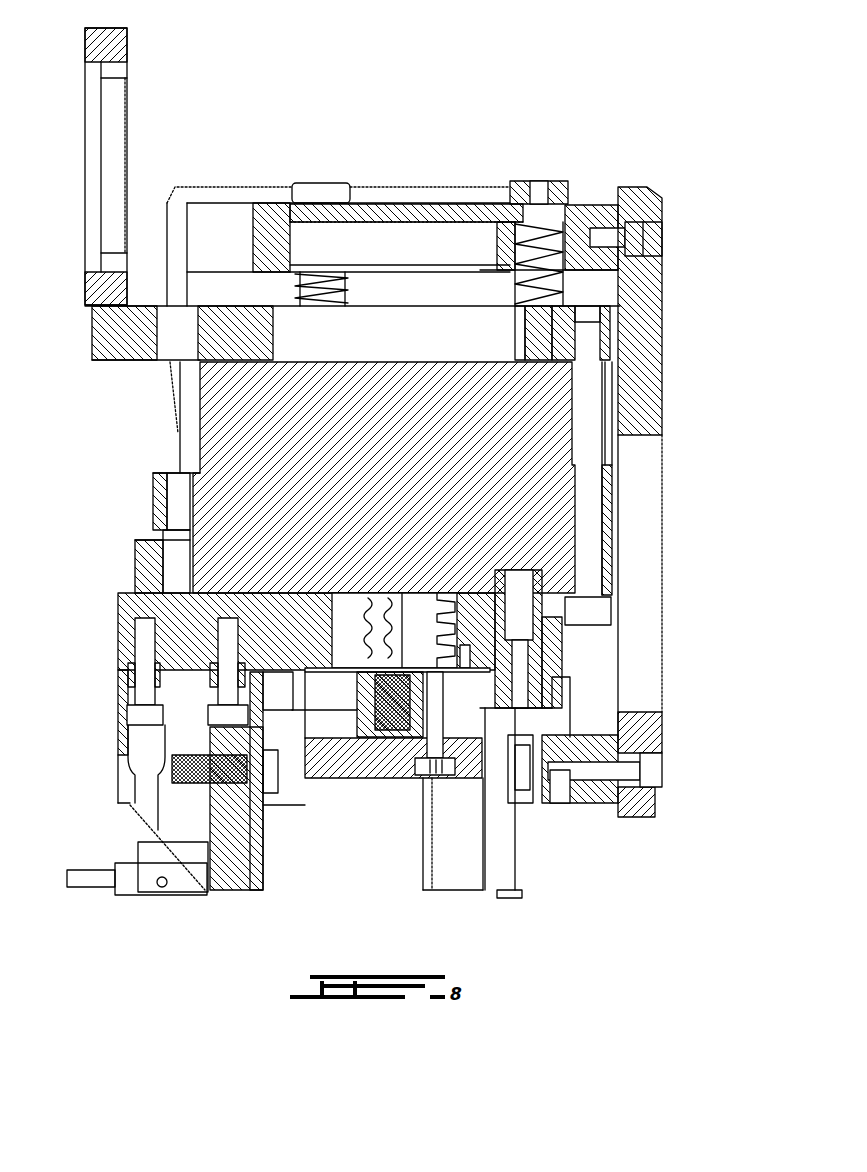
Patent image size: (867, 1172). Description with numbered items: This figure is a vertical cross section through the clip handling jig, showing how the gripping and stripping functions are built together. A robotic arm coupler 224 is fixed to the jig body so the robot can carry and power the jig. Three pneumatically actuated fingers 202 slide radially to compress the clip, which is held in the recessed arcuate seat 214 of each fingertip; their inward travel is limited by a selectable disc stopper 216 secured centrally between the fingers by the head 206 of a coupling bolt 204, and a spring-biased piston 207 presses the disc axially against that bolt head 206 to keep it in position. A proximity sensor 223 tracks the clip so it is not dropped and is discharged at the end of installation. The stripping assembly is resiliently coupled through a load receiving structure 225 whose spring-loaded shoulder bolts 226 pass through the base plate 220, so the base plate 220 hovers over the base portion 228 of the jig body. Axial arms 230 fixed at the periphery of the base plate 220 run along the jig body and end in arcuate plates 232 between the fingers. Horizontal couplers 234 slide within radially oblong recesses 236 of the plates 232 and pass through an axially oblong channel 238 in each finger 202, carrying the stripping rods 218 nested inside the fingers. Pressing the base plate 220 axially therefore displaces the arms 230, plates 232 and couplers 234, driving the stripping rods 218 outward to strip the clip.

The fingers 202 is at (118, 742).
The coupling bolt 204 is at (522, 800).
The bolt head 206 is at (440, 892).
The spring-biased piston 207 is at (397, 740).
The recessed arcuate seat 214 is at (508, 898).
The selectable disc stopper 216 is at (360, 780).
The stripping rods 218 is at (245, 893).
The base plate 220 is at (453, 203).
The proximity sensor 223 is at (140, 896).
The robotic arm coupler 224 is at (113, 42).
The load receiving structure 225 is at (678, 392).
The shoulder bolts 226 is at (566, 185).
The base portion 228 is at (417, 305).
The axial arms 230 is at (621, 338).
The arcuate plates 232 is at (592, 742).
The horizontal couplers 234 is at (135, 715).
The radially oblong recesses 236 is at (525, 752).
The axially oblong channel 238 is at (175, 805).